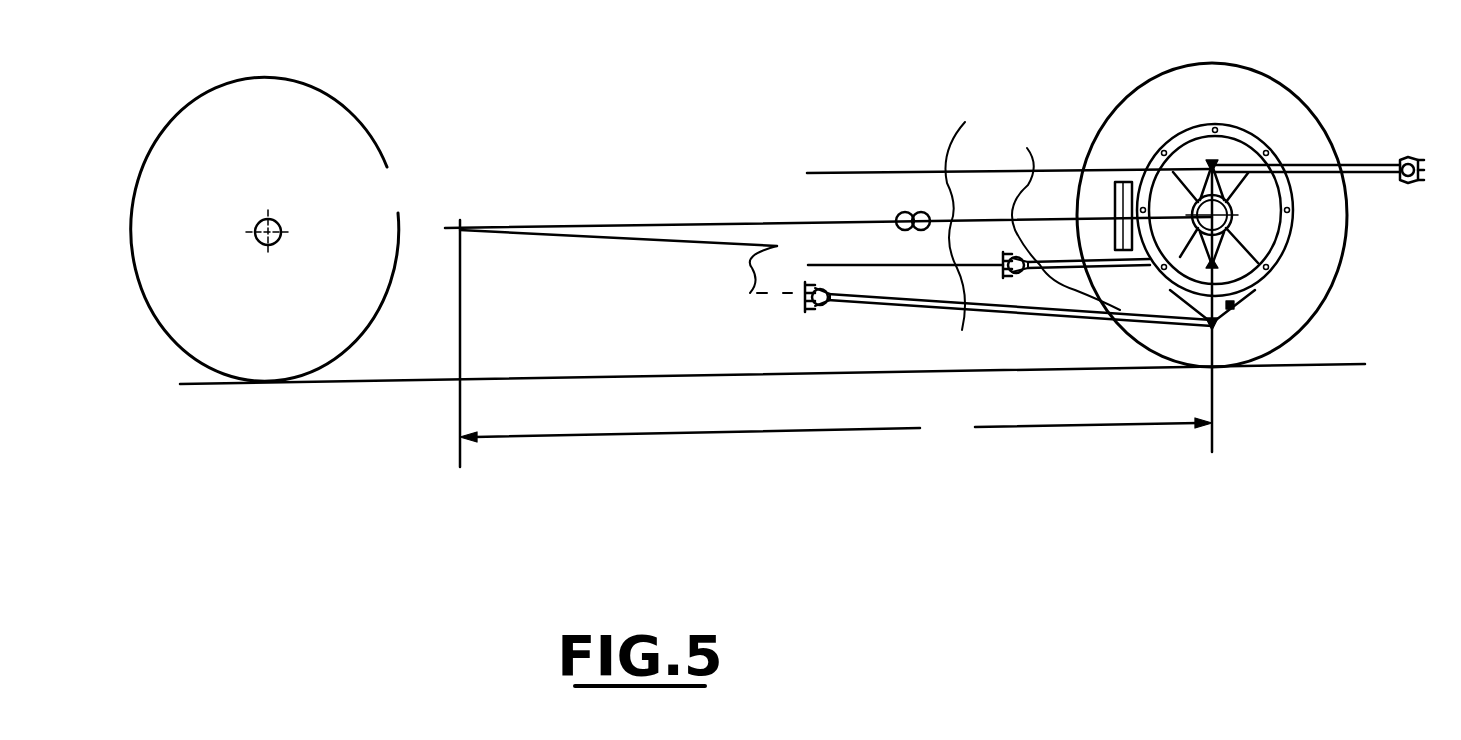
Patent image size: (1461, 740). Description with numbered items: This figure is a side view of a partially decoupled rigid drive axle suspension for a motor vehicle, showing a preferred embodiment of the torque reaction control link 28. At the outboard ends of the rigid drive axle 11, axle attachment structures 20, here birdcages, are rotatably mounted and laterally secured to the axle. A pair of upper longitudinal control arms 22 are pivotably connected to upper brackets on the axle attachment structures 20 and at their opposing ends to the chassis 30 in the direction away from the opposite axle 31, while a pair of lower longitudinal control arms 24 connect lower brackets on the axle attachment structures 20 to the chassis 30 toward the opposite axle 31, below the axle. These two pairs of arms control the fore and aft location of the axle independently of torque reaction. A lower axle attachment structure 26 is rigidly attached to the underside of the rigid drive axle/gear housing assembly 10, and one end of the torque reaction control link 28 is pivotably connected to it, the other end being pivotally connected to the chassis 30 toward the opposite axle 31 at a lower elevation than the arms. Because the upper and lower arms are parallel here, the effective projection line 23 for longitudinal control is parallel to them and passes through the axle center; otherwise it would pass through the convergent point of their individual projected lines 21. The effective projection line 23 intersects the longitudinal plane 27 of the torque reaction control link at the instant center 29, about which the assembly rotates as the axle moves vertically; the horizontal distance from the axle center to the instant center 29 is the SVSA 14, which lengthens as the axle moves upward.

The rigid drive axle/gear housing assembly 10 is at (1267, 180).
The rigid drive axle 11 is at (1240, 198).
The SVSA 14 is at (836, 426).
The axle attachment structure 20 is at (1275, 243).
The individual projected lines 21 is at (979, 228).
The upper longitudinal control arm 22 is at (1327, 163).
The effective projection line 23 is at (730, 220).
The lower longitudinal control arm 24 is at (1061, 215).
The lower axle attachment structure 26 is at (1232, 306).
The longitudinal plane 27 is at (650, 243).
The torque reaction control link 28 is at (1030, 318).
The instant center 29 is at (458, 222).
The chassis 30 is at (813, 306).
The opposite axle 31 is at (266, 213).